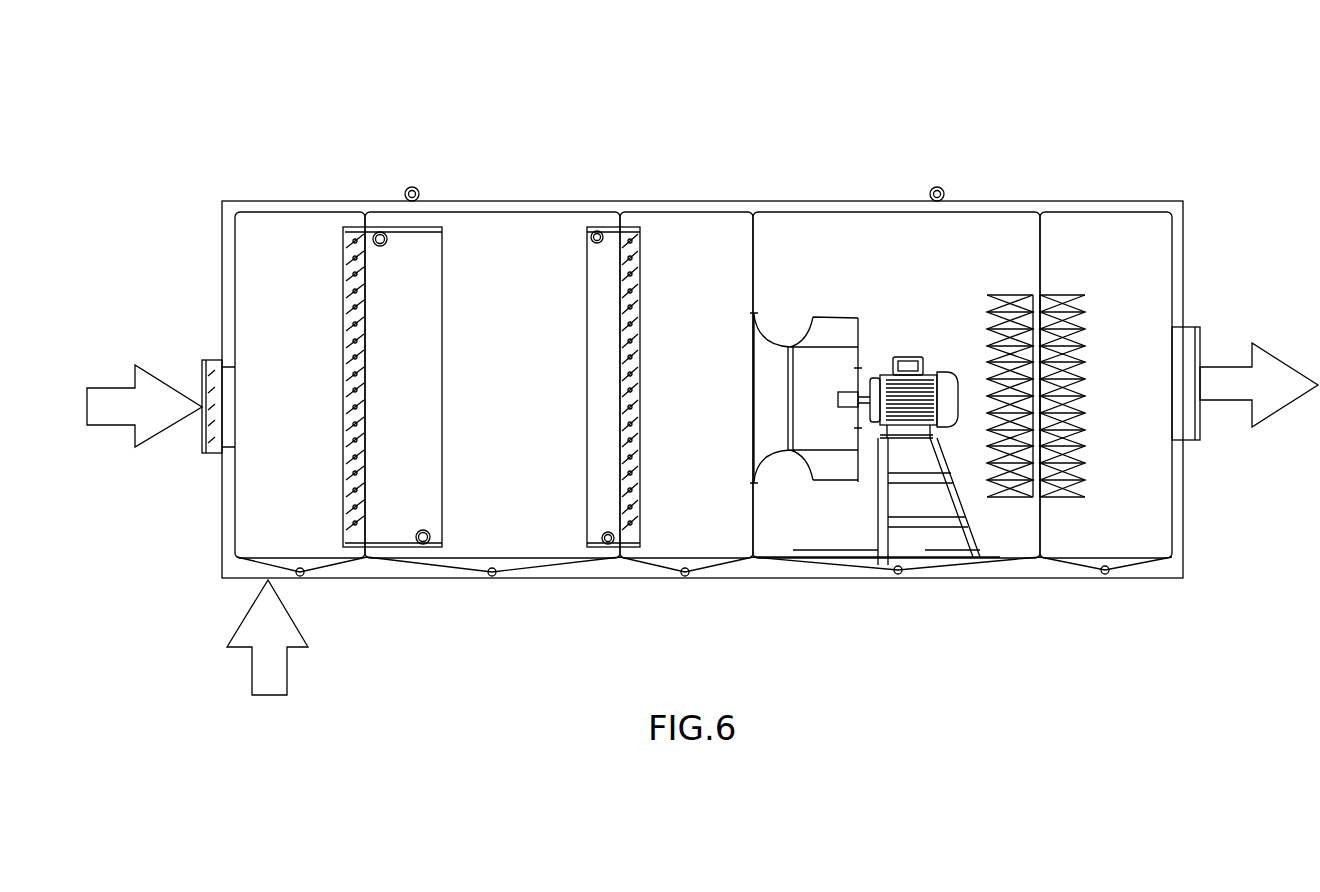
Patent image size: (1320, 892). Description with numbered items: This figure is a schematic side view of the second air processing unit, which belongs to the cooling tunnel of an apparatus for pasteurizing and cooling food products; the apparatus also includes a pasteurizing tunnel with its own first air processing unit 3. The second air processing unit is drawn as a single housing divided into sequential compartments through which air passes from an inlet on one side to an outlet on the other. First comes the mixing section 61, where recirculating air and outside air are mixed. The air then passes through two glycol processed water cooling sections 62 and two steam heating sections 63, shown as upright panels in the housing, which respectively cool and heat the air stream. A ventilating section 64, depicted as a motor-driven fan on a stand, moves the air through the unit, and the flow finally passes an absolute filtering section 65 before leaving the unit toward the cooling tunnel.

The first air processing unit 3 is at (1013, 140).
The mixing section 61 is at (305, 252).
The glycol processed water cooling section 62 is at (383, 233).
The steam heating section 63 is at (598, 235).
The ventilating section 64 is at (832, 317).
The absolute filtering section 65 is at (1037, 300).